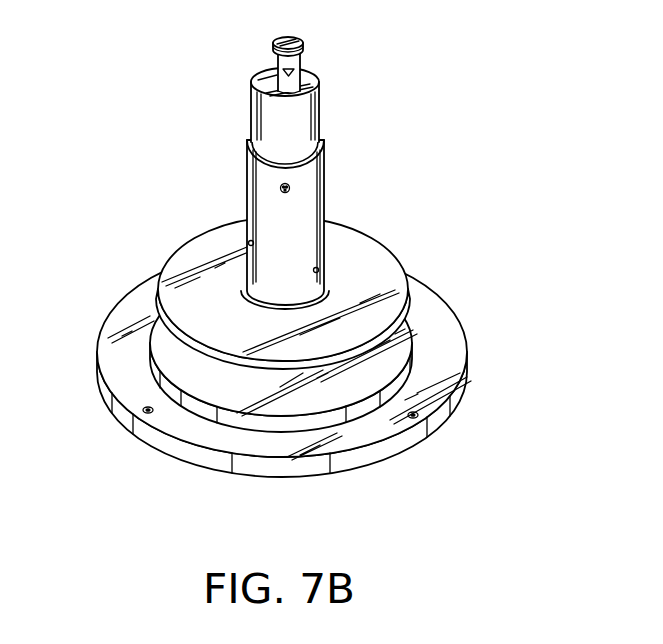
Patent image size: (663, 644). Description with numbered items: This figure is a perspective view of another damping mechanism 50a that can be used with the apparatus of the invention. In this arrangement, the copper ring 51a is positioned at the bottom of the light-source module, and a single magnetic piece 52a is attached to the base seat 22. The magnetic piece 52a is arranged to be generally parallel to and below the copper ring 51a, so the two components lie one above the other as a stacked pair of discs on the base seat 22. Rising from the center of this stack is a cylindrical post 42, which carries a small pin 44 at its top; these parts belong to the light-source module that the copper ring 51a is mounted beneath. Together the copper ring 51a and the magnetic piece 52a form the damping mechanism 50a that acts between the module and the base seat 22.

The base seat 22 is at (130, 363).
The cylindrical post 42 is at (320, 191).
The pin 44 is at (303, 38).
The damping mechanism 50a is at (467, 222).
The copper ring 51a is at (387, 268).
The magnetic piece 52a is at (165, 340).